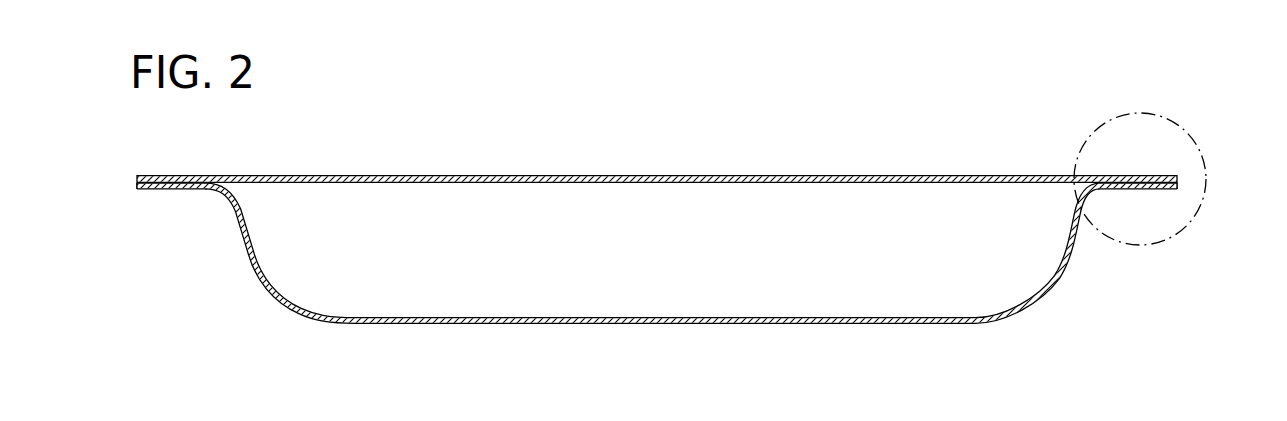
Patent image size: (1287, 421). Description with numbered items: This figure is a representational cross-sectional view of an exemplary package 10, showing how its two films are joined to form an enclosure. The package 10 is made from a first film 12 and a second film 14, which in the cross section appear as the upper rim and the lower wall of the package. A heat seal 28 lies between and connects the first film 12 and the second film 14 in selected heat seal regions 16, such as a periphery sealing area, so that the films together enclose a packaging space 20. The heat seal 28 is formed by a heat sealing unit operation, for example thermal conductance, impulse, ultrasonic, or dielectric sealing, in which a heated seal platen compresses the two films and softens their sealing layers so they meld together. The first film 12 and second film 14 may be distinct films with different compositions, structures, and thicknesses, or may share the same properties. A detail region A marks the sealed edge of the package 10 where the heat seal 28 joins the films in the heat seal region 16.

The package 10 is at (662, 203).
The first film 12 is at (477, 175).
The second film 14 is at (1017, 312).
The heat seal regions 16 is at (157, 190).
The packaging space 20 is at (695, 257).
The heat seal 28 is at (1143, 175).
The detail region A is at (1182, 130).